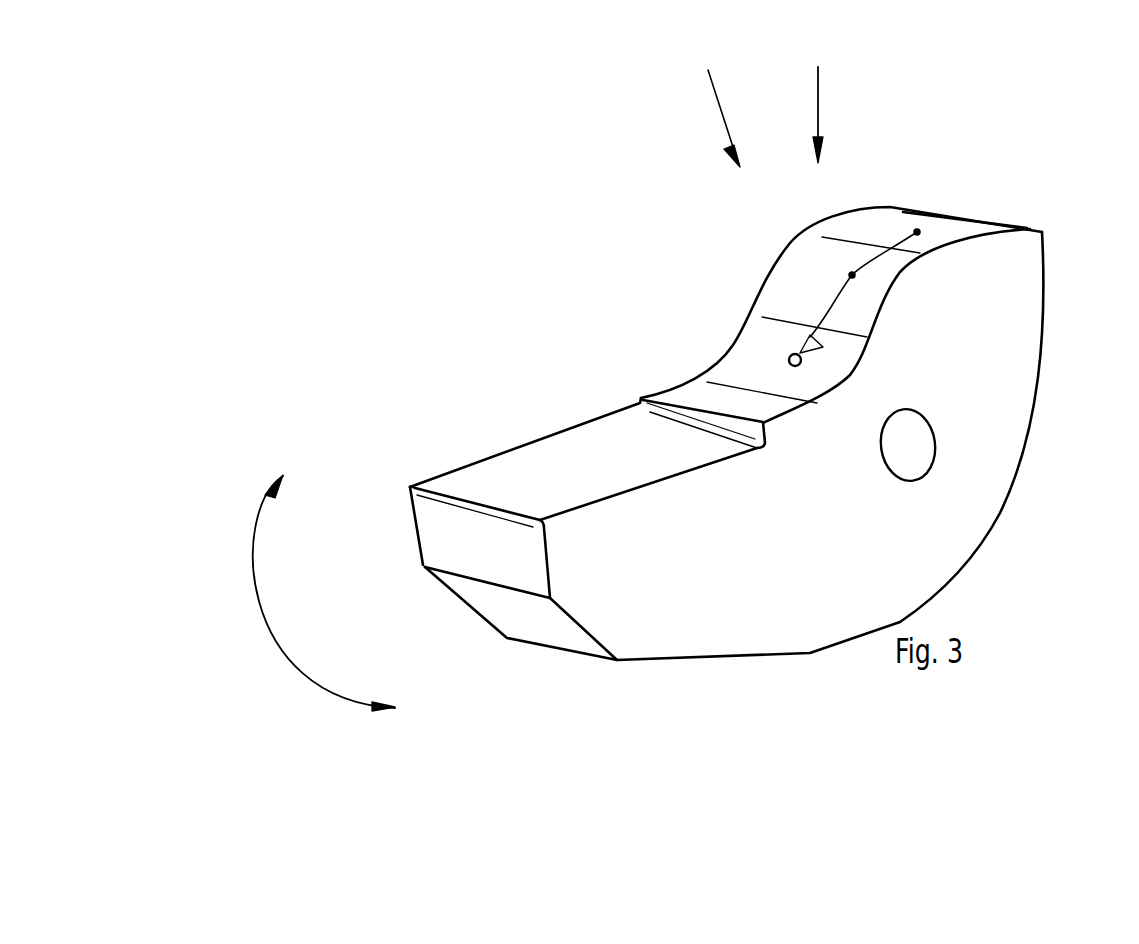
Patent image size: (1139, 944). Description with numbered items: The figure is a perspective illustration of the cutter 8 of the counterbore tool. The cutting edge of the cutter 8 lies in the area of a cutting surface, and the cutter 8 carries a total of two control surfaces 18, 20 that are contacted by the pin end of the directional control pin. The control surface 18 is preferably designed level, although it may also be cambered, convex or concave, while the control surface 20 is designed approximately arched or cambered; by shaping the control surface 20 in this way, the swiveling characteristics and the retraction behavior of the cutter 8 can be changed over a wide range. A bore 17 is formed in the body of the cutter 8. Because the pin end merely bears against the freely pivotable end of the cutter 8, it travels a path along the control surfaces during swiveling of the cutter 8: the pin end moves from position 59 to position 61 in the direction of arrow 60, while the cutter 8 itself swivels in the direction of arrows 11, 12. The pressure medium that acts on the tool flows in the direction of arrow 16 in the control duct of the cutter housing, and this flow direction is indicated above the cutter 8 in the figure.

The cutter 8 is at (724, 108).
The direction of arrow 11 is at (272, 490).
The direction of arrow 12 is at (378, 713).
The direction of arrow 16 is at (820, 90).
The bore 17 is at (910, 443).
The control surface 18 is at (895, 233).
The control surface 20 is at (813, 327).
The position 59 is at (919, 230).
The direction of arrow 60 is at (857, 278).
The position 61 is at (803, 361).